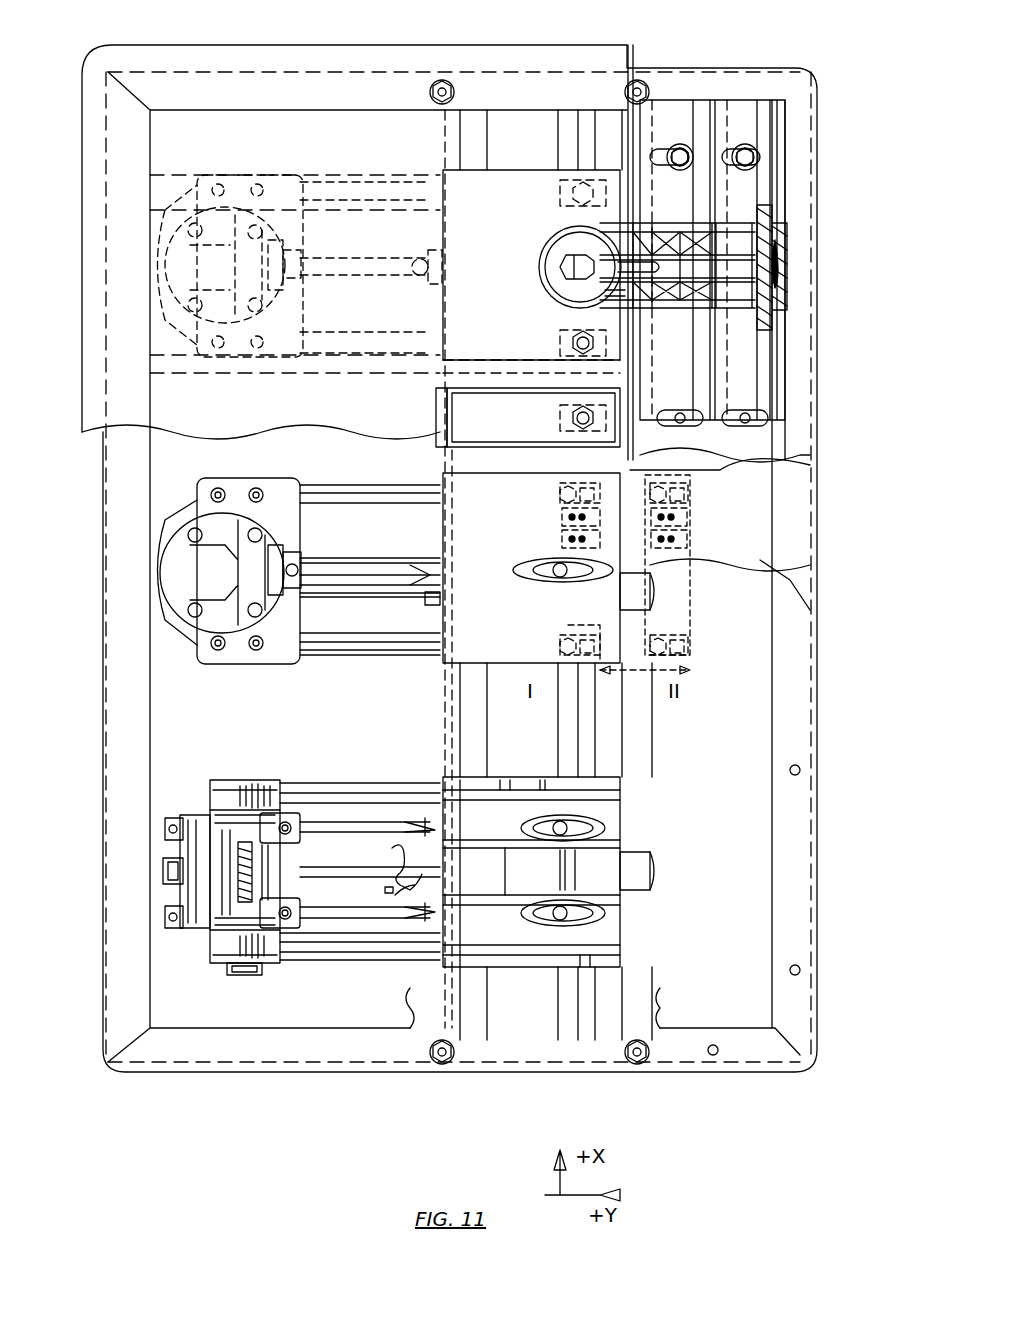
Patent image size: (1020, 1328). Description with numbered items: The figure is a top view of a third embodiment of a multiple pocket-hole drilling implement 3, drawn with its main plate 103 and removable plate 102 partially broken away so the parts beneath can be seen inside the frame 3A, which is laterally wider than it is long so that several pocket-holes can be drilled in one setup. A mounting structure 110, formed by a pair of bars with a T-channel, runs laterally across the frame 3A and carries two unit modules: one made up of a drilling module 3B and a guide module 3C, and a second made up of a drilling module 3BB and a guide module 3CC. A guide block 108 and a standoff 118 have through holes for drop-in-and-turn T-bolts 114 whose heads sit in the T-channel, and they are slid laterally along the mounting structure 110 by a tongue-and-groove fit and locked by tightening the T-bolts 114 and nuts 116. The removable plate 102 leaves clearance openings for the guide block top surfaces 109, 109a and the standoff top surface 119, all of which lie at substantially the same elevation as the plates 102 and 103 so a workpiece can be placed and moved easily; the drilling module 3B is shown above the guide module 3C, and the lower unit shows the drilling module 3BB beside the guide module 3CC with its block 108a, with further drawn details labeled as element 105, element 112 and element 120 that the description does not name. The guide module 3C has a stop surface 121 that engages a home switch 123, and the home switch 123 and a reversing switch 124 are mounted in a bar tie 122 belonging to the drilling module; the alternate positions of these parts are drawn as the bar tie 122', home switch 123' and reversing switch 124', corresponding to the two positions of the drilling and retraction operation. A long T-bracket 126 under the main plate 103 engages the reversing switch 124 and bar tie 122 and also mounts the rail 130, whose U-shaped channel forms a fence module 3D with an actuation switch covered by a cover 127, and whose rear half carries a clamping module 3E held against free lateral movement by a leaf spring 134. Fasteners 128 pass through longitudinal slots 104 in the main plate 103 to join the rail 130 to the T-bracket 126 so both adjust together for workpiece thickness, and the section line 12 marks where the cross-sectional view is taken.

The pocket-hole drilling implement 3 is at (285, 1103).
The frame 3A is at (425, 1080).
The drilling module 3B is at (320, 238).
The guide module 3C is at (430, 300).
The fence module 3D is at (700, 95).
The clamping module 3E is at (795, 228).
The drilling module 3BB is at (290, 770).
The guide module 3CC is at (430, 776).
The section line 12 is at (875, 416).
The removable plate 102 is at (295, 246).
The main plate 103 is at (700, 425).
The through slots 104 is at (660, 158).
The bearing 105 is at (535, 268).
The guide block 108 is at (440, 665).
The motor 108a is at (430, 975).
The guide block top surface 109 is at (531, 416).
The guide block top surface 109a is at (612, 832).
The mounting structure 110 is at (652, 912).
The rail 112 is at (570, 1010).
The T-bolts 114 is at (550, 345).
The nuts 116 is at (560, 320).
The standoff 118 is at (440, 447).
The standoff top surface 119 is at (533, 417).
The shaft stub 120 is at (655, 868).
The stop surface 121 is at (560, 548).
The bar tie 122 is at (542, 626).
The bar tie 122' is at (723, 648).
The home switch 123 is at (543, 524).
The home switch 123' is at (723, 586).
The reversing switch 124 is at (547, 491).
The reversing switch 124' is at (781, 548).
The T-bracket 126 is at (720, 470).
The cover 127 is at (678, 112).
The fasteners 128 is at (755, 160).
The rail 130 is at (785, 195).
The leaf spring 134 is at (790, 265).